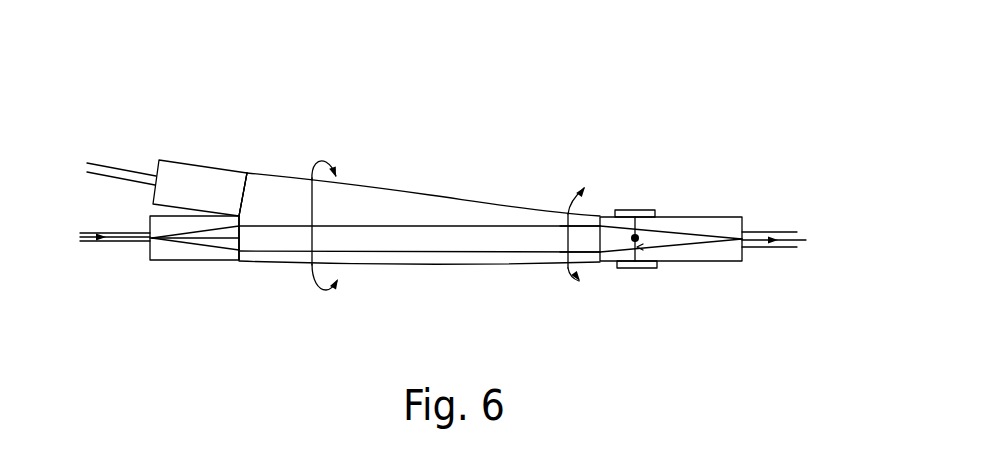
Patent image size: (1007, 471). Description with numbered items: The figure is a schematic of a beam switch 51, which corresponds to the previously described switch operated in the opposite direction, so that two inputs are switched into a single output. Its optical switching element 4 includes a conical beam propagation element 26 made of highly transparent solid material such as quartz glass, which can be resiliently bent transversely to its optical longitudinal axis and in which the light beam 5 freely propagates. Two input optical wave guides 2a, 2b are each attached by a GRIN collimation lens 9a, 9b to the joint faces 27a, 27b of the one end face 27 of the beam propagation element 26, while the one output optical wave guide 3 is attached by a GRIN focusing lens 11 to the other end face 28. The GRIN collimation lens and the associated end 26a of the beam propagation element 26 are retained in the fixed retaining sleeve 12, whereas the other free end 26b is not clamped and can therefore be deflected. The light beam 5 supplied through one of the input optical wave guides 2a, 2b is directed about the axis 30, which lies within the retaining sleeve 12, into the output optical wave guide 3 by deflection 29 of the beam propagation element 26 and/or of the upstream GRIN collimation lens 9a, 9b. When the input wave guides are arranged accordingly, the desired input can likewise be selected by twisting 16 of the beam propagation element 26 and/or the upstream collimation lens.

The input optical wave guide 2a is at (146, 175).
The input optical wave guide 2b is at (140, 243).
The output optical wave guide 3 is at (777, 232).
The optical switching element 4 is at (457, 148).
The light beam 5 is at (95, 243).
The GRIN collimation lens 9a is at (180, 178).
The GRIN collimation lens 9b is at (177, 262).
The GRIN focusing lens 11 is at (710, 262).
The retaining sleeve 12 is at (633, 210).
The twisting 16 is at (312, 178).
The beam propagation element 26 is at (428, 226).
The end of the beam propagation element 26a is at (618, 243).
The free end of the beam propagation element 26b is at (270, 203).
The end face 27 is at (242, 215).
The joint face 27a is at (248, 186).
The joint face 27b is at (242, 246).
The end face 28 is at (650, 268).
The deflection 29 is at (568, 212).
The axis 30 is at (638, 236).
The beam switch 51 is at (443, 182).